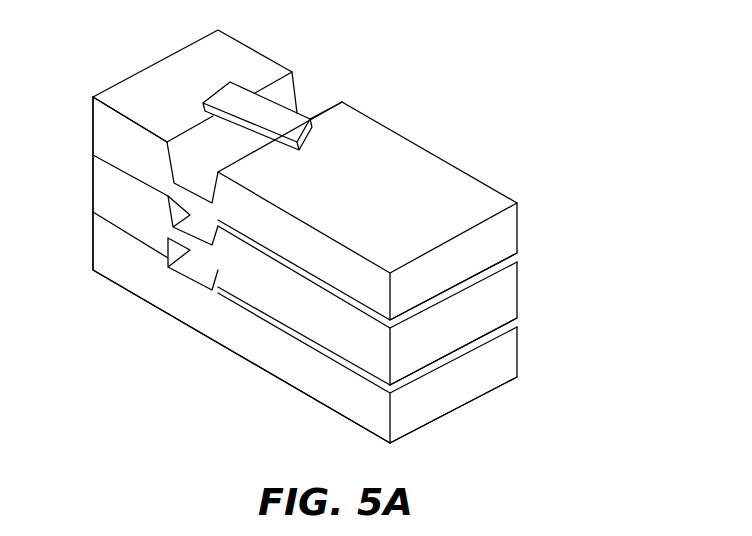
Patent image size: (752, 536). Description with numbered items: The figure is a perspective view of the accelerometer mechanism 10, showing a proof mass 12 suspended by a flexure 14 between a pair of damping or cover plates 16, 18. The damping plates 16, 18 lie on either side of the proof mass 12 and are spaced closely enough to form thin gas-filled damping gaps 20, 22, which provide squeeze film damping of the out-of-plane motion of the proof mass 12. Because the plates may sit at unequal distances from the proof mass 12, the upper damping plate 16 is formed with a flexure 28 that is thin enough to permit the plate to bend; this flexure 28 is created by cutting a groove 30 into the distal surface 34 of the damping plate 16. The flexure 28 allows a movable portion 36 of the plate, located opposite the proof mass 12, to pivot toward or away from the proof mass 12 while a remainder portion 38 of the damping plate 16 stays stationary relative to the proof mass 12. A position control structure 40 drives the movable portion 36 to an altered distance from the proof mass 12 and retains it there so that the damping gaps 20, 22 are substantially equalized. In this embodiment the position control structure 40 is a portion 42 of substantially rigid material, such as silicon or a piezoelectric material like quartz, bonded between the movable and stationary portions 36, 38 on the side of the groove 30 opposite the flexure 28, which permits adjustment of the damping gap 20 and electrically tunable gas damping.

The accelerometer mechanism 10 is at (525, 84).
The proof mass 12 is at (315, 320).
The flexure 14 is at (200, 228).
The damping plate 16 is at (100, 133).
The damping plate 18 is at (100, 247).
The damping gap 20 is at (519, 258).
The damping gap 22 is at (519, 324).
The flexure 28 is at (204, 184).
The groove 30 is at (320, 100).
The distal surface 34 is at (450, 196).
The movable portion 36 is at (319, 260).
The remainder portion 38 is at (136, 156).
The position control structure 40 is at (258, 82).
The rigid portion 42 is at (218, 92).